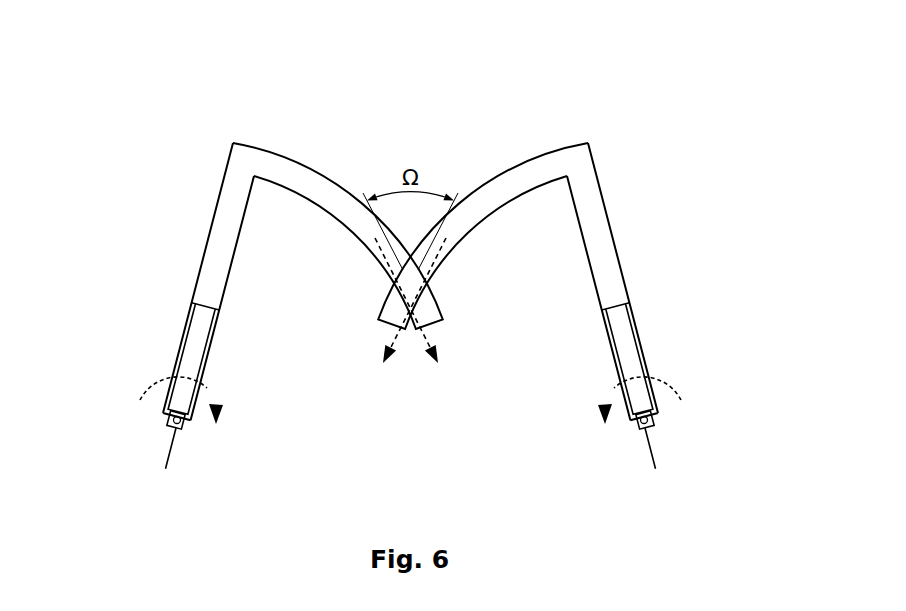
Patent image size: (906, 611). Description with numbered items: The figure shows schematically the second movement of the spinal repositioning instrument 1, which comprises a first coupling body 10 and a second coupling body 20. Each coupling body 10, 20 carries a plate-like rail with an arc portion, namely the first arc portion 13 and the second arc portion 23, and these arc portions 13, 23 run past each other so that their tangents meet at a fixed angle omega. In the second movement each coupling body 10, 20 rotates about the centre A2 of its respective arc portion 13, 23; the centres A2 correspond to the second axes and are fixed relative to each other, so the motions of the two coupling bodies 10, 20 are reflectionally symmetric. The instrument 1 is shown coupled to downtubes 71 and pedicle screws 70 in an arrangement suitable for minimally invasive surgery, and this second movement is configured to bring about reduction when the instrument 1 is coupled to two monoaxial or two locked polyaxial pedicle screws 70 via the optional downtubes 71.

The spinal repositioning instrument 1 is at (426, 228).
The first coupling body 10 is at (595, 134).
The first arc portion 13 is at (489, 178).
The second coupling body 20 is at (226, 134).
The second arc portion 23 is at (332, 178).
The pedicle screw 70 is at (160, 448).
The downtube 71 is at (179, 318).
The centre of arc portion A2 is at (159, 426).